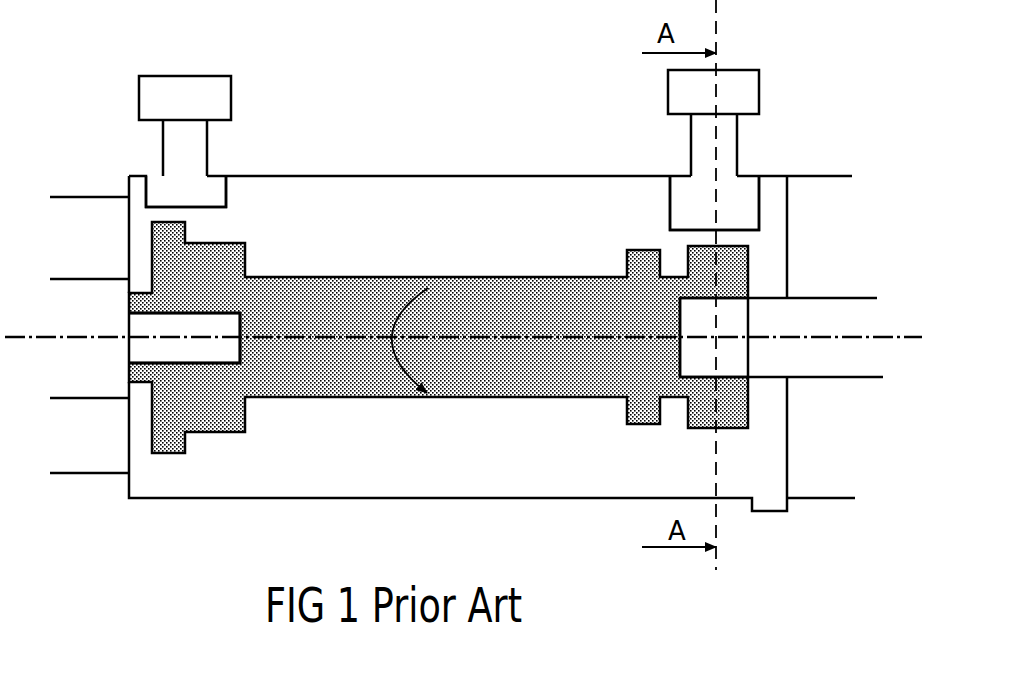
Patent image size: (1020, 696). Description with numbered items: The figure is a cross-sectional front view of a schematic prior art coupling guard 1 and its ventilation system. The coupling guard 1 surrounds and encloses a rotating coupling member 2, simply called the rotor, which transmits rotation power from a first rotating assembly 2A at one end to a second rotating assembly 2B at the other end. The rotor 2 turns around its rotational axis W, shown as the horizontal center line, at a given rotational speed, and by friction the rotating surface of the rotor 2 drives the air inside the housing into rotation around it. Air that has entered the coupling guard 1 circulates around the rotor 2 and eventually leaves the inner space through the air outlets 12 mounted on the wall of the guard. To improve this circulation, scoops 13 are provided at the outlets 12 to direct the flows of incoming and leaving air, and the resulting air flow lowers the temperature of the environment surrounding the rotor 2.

The coupling guard 1 is at (452, 282).
The rotating coupling member 2 is at (438, 337).
The first rotating assembly 2A is at (156, 325).
The second rotating assembly 2B is at (781, 337).
The outlet 12 is at (128, 75).
The scoop 13 is at (226, 188).
The rotational axis W is at (464, 319).